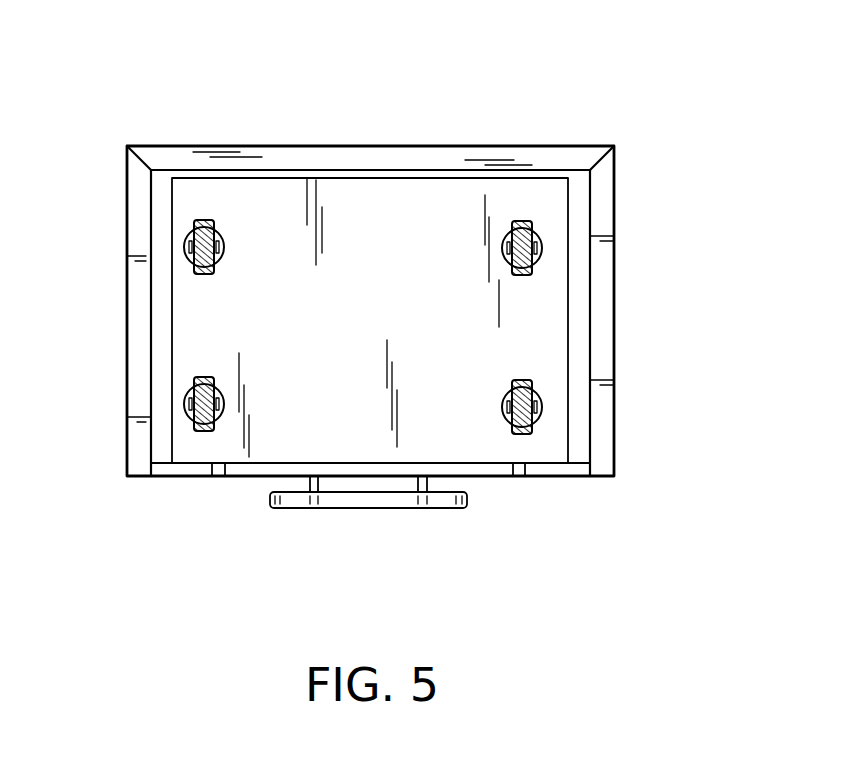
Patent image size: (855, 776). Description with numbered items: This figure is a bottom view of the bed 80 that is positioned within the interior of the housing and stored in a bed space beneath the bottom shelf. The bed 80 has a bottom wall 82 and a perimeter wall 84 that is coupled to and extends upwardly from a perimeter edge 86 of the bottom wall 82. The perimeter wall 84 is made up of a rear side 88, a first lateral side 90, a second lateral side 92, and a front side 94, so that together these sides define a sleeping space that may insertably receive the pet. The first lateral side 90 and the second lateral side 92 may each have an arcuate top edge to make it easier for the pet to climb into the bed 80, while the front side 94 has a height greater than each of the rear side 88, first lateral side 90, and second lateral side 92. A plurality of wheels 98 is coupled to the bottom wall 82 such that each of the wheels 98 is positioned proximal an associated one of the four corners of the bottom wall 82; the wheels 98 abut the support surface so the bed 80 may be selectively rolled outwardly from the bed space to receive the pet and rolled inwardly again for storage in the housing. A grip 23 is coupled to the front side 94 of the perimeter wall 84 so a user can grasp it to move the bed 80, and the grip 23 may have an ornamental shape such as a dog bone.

The bed 80 is at (183, 136).
The bottom wall 82 is at (268, 212).
The perimeter wall 84 is at (614, 146).
The perimeter edge 86 is at (458, 170).
The rear side 88 is at (368, 146).
The first lateral side 90 is at (126, 218).
The second lateral side 92 is at (614, 328).
The front side 94 is at (247, 476).
The wheels 98 is at (186, 250).
The grip 23 is at (368, 508).